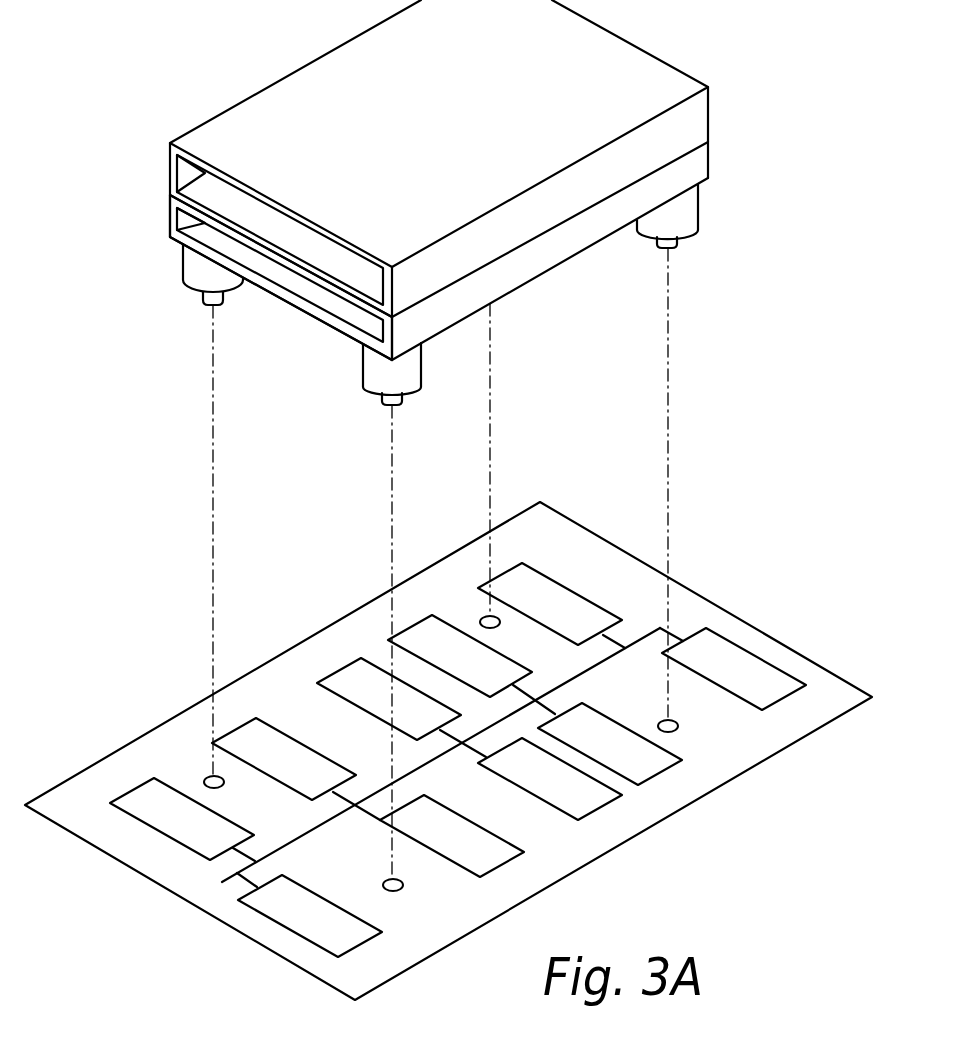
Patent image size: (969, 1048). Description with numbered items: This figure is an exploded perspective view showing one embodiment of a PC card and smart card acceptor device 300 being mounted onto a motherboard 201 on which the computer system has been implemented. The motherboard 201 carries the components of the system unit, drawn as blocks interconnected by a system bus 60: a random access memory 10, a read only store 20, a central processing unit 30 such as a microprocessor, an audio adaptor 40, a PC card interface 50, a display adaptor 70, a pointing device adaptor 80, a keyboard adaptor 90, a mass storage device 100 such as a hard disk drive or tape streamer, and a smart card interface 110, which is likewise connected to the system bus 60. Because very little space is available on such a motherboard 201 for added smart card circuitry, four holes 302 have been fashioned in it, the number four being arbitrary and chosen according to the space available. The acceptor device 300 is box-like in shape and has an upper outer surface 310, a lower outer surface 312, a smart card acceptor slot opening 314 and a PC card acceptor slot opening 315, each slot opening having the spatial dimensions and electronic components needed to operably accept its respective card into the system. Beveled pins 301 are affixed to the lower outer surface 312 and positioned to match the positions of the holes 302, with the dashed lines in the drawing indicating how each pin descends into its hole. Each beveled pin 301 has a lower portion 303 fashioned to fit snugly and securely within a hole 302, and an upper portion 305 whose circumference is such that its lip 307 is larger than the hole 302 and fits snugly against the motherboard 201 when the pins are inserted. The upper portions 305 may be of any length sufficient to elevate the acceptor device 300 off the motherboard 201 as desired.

The PC card and smart card acceptor device 300 is at (478, 91).
The upper outer surface 310 is at (278, 105).
The lower outer surface 312 is at (514, 309).
The smart card acceptor slot opening 314 is at (192, 227).
The PC card acceptor slot opening 315 is at (190, 186).
The beveled pin 301 is at (423, 306).
The upper portion of beveled pin 305 is at (182, 263).
The lip 307 is at (190, 288).
The lower portion of beveled pin 303 is at (218, 306).
The hole 302 is at (214, 776).
The motherboard 201 is at (768, 638).
The system bus 60 is at (660, 628).
The random access memory 10 is at (566, 614).
The read only store 20 is at (476, 666).
The central processing unit 30 is at (383, 697).
The audio adaptor 40 is at (749, 680).
The PC card interface 50 is at (196, 829).
The display adaptor 70 is at (623, 754).
The pointing device adaptor 80 is at (562, 791).
The keyboard adaptor 90 is at (466, 847).
The mass storage device 100 is at (301, 772).
The smart card interface 110 is at (333, 927).